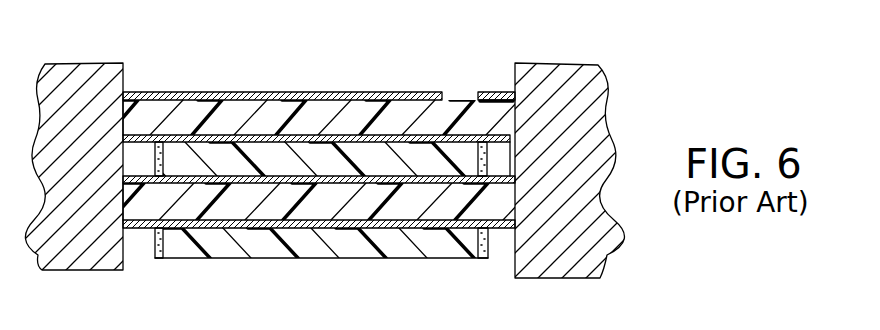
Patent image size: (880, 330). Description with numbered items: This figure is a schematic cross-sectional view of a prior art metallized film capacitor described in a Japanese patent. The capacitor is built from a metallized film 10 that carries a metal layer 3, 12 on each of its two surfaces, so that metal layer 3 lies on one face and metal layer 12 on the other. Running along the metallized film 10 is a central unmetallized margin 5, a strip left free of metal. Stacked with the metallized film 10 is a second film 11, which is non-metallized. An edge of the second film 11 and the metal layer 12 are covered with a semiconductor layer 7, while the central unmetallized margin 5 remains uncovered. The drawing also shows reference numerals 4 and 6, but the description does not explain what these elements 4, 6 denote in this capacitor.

The metal layer 3 is at (380, 190).
The press plate / mold block 4 is at (612, 268).
The central unmetallized margin 5 is at (178, 137).
The cavity 6 is at (500, 163).
The semiconductor layer 7 is at (487, 155).
The metallized film 10 is at (361, 117).
The second film 11 is at (292, 160).
The metal layer 12 is at (490, 92).